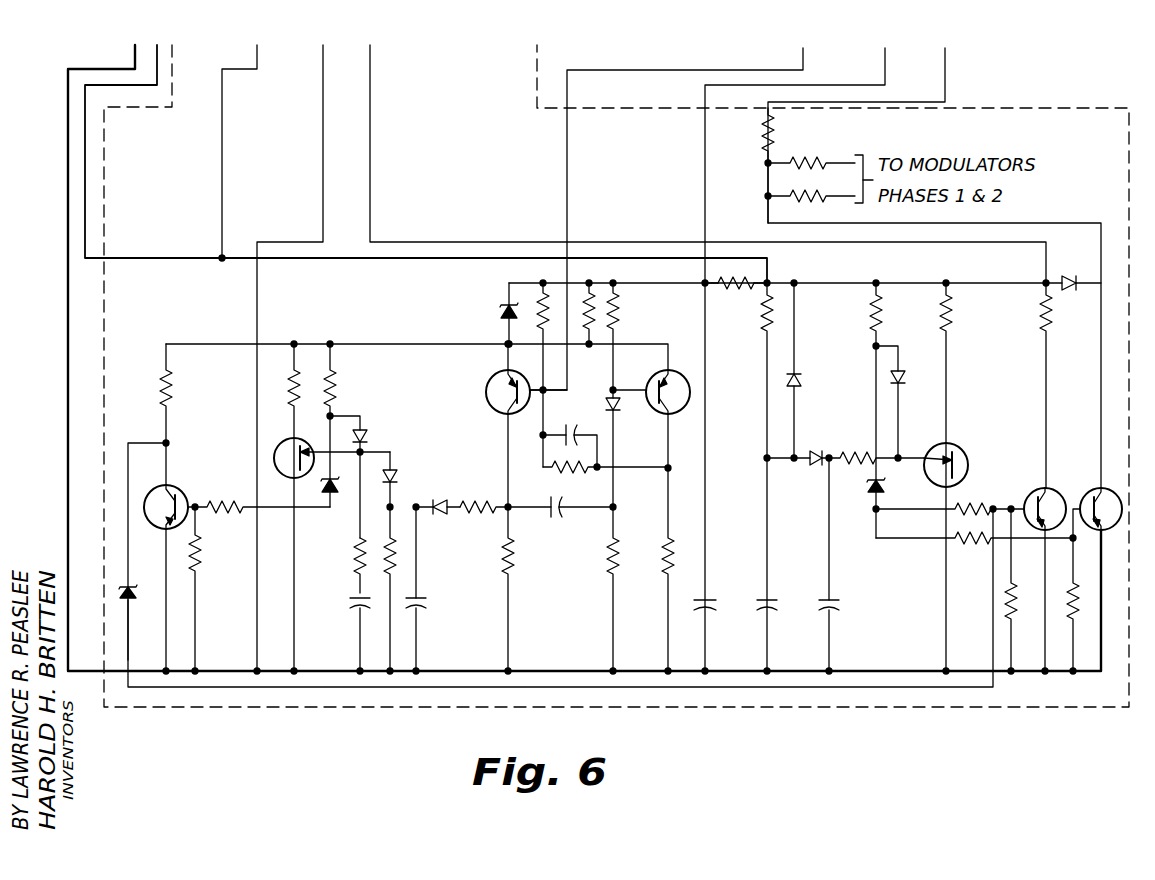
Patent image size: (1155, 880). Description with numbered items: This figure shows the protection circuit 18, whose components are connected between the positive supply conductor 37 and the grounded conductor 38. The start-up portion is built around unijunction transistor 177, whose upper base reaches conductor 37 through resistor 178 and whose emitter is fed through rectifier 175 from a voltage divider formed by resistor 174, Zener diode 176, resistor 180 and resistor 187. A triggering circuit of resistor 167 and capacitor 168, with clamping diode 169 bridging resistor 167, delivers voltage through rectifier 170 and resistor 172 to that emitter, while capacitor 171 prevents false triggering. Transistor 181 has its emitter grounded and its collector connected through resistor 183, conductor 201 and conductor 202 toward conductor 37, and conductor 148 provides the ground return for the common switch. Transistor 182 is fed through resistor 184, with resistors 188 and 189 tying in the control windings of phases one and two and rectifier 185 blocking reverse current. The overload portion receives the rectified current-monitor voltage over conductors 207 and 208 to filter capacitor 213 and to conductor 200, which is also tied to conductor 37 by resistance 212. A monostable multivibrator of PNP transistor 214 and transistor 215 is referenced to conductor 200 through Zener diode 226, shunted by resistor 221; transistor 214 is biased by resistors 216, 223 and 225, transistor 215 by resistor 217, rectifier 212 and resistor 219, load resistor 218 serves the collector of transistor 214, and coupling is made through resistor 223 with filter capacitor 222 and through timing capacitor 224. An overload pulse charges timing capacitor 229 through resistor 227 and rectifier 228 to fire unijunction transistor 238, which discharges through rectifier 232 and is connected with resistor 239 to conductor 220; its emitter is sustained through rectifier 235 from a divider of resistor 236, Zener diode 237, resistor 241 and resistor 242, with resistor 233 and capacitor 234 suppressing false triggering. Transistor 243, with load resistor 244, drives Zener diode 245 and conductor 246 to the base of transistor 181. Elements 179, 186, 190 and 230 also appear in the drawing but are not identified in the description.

The protection circuit 18 is at (870, 708).
The positive supply conductor 37 is at (85, 130).
The grounded conductor 38 is at (68, 98).
The conductor 148 is at (323, 132).
The resistor 167 is at (762, 312).
The capacitor 168 is at (770, 598).
The clamping diode 169 is at (797, 372).
The rectifier 170 is at (818, 468).
The capacitor 171 is at (833, 598).
The resistor 172 is at (868, 450).
The resistor 174 is at (882, 300).
The rectifier 175 is at (902, 370).
The Zener diode 176 is at (882, 490).
The unijunction transistor 177 is at (954, 448).
The resistor 178 is at (952, 300).
The resistor 179 is at (962, 500).
The resistor 180 is at (975, 544).
The NPN transistor 181 is at (1037, 490).
The transistor 182 is at (1093, 490).
The resistor 183 is at (1052, 314).
The resistor 184 is at (760, 122).
The rectifier 185 is at (1066, 278).
The resistor 186 is at (1006, 588).
The resistor 187 is at (1068, 585).
The resistor 188 is at (801, 160).
The resistor 189 is at (800, 200).
The lead 190 is at (948, 74).
The conductor 200 is at (682, 280).
The conductor 201 is at (370, 128).
The conductor 202 is at (222, 128).
The conductor 207 is at (690, 70).
The conductor 208 is at (862, 85).
The resistance and rectifier 212 is at (746, 280).
The capacitor 213 is at (708, 598).
The PNP transistor 214 is at (502, 300).
The transistor 215 is at (662, 310).
The resistor 216 is at (543, 282).
The resistor 217 is at (618, 305).
The load resistor 218 is at (513, 556).
The resistor 219 is at (609, 560).
The conductor 220 is at (420, 344).
The resistor 221 is at (587, 282).
The filter capacitor 222 is at (558, 428).
The resistor 223 is at (560, 470).
The timing capacitor 224 is at (548, 518).
The resistor 225 is at (665, 540).
The Zener diode 226 is at (504, 303).
The resistor 227 is at (494, 486).
The rectifier 228 is at (443, 486).
The timing capacitor 229 is at (420, 597).
The resistor 230 is at (398, 550).
The rectifier 232 is at (395, 468).
The resistor 233 is at (356, 552).
The capacitor 234 is at (352, 597).
The rectifier 235 is at (366, 428).
The resistor 236 is at (336, 376).
The Zener diode 237 is at (334, 498).
The unijunction transistor 238 is at (275, 448).
The resistor 239 is at (291, 380).
The resistor 241 is at (242, 486).
The resistor 242 is at (200, 560).
The transistor 243 is at (172, 486).
The load resistor 244 is at (162, 376).
The Zener diode 245 is at (124, 586).
The conductor 246 is at (128, 622).